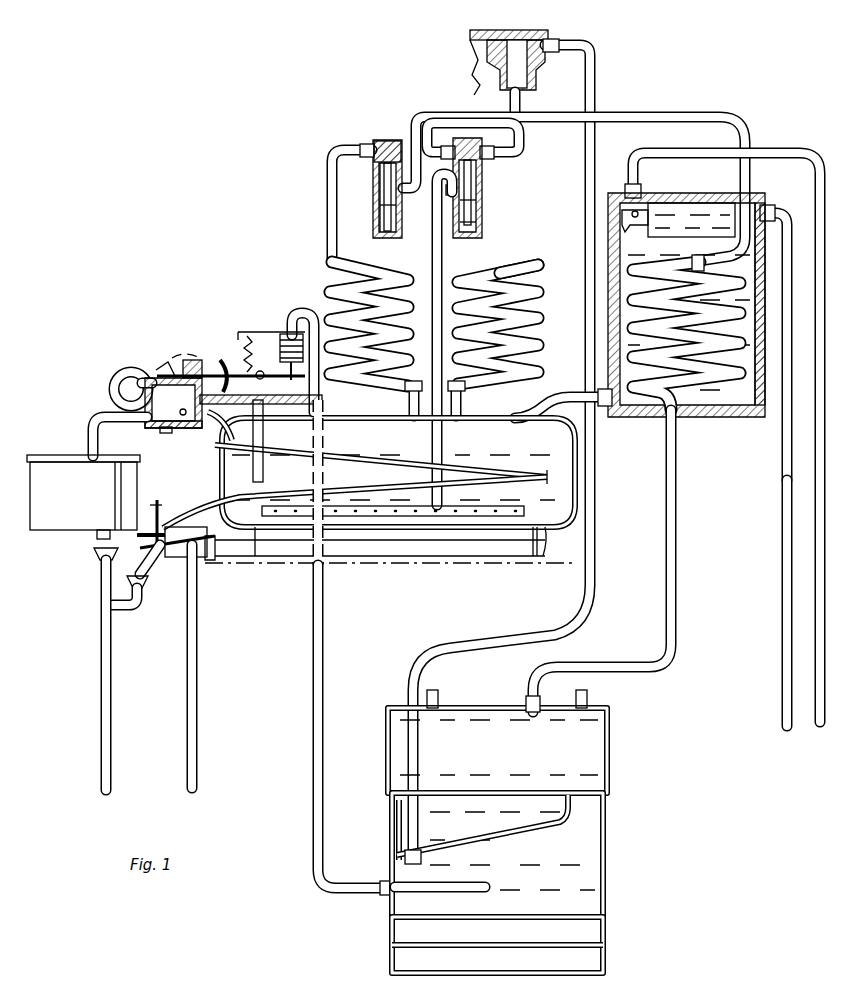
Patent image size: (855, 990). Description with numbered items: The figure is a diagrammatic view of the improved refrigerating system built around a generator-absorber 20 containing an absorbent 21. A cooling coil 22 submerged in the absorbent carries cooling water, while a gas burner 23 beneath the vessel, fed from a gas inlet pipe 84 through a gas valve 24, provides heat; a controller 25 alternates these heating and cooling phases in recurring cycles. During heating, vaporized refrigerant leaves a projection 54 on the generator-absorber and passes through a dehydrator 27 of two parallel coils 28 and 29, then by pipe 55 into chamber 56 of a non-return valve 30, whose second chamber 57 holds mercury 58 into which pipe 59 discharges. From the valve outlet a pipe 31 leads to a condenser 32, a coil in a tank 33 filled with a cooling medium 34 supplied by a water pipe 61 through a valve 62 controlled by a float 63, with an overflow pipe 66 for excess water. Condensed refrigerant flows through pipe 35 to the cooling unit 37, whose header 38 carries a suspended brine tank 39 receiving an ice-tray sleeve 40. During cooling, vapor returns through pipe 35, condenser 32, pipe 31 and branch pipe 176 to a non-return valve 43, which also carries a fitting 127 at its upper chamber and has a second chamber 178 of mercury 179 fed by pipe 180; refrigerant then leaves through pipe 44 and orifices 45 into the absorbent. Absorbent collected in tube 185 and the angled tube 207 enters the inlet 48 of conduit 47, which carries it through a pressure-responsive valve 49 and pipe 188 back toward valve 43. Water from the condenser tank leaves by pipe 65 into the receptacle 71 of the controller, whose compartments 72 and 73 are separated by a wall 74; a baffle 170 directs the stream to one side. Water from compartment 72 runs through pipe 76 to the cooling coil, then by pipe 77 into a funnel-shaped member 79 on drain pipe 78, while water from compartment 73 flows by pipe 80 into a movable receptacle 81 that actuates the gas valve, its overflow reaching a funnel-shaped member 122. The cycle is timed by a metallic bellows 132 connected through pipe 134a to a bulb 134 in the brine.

The generator-absorber 20 is at (393, 493).
The absorbent 21 is at (555, 463).
The coil 22 is at (546, 530).
The gas burner 23 is at (393, 557).
The gas valve 24 is at (170, 556).
The controller 25 is at (239, 360).
The dehydrator 27 is at (467, 257).
The coil 28 is at (330, 290).
The coil 29 is at (542, 290).
The non-return valve 30 is at (374, 174).
The pipe 31 is at (652, 115).
The condenser 32 is at (720, 380).
The tank 33 is at (765, 240).
The cooling medium 34 is at (748, 395).
The pipe 35 is at (678, 597).
The cooling unit 37 is at (493, 825).
The header 38 is at (612, 745).
The brine tank 39 is at (606, 872).
The ice-tray sleeve 40 is at (590, 918).
The non-return valve 43 is at (484, 188).
The pipe 44 is at (431, 246).
The orifices 45 is at (462, 516).
The conduit 47 is at (592, 55).
The inlet 48 is at (403, 858).
The valve 49 is at (528, 38).
The projection 54 is at (462, 395).
The pipe 55 is at (326, 197).
The chamber 56 is at (392, 142).
The second chamber 57 is at (375, 188).
The mercury 58 is at (378, 220).
The pipe 59 is at (380, 172).
The water pipe 61 is at (786, 152).
The valve 62 is at (600, 195).
The float 63 is at (680, 203).
The pipe 65 is at (565, 396).
The overflow pipe 66 is at (781, 510).
The receptacle 71 is at (146, 383).
The compartment 72 is at (148, 428).
The compartment 73 is at (198, 424).
The wall 74 is at (183, 416).
The pipe 76 is at (166, 435).
The pipe 77 is at (178, 518).
The drain pipe 78 is at (100, 671).
The funnel-shaped member 79 is at (146, 586).
The pipe 80 is at (86, 432).
The movable receptacle 81 is at (130, 480).
The gas inlet pipe 84 is at (198, 679).
The funnel-shaped member 122 is at (93, 550).
The fitting 127 is at (474, 149).
The metallic bellows 132 is at (282, 349).
The bulb 134 is at (490, 887).
The pipe 134a is at (323, 674).
The baffle 170 is at (185, 375).
The branch pipe 176 is at (446, 150).
The second chamber 178 is at (480, 200).
The mercury 179 is at (480, 222).
The pipe 180 is at (478, 173).
The tube 185 is at (392, 808).
The pipe 188 is at (520, 106).
The tube 207 is at (590, 822).